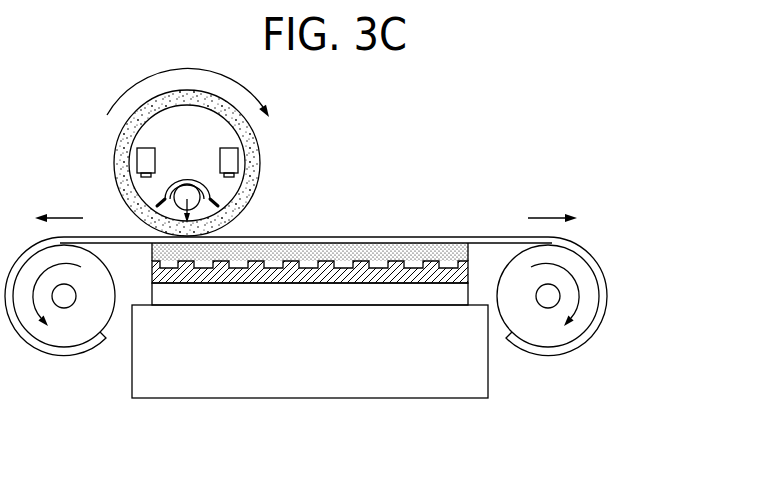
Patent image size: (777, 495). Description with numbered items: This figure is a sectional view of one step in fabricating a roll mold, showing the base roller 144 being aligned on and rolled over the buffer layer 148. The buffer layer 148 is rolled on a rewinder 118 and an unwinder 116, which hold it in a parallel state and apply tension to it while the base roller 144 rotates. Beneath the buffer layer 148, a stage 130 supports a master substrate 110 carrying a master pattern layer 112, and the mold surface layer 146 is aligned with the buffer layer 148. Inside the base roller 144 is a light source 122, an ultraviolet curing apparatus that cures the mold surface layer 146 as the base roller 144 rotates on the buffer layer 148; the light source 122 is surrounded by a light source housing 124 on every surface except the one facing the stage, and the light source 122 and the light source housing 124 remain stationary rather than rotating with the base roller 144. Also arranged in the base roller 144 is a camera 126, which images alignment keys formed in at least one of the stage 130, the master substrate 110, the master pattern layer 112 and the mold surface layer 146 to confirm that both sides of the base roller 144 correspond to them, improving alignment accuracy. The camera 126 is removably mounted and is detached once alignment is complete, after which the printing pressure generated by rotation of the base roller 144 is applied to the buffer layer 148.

The master substrate 110 is at (182, 292).
The master pattern layer 112 is at (257, 275).
The unwinder 116 is at (78, 335).
The rewinder 118 is at (544, 333).
The light source 122 is at (180, 191).
The light source housing 124 is at (184, 185).
The camera 126 is at (233, 151).
The stage 130 is at (333, 375).
The base roller 144 is at (256, 162).
The mold surface layer 146 is at (414, 253).
The buffer layer 148 is at (607, 298).